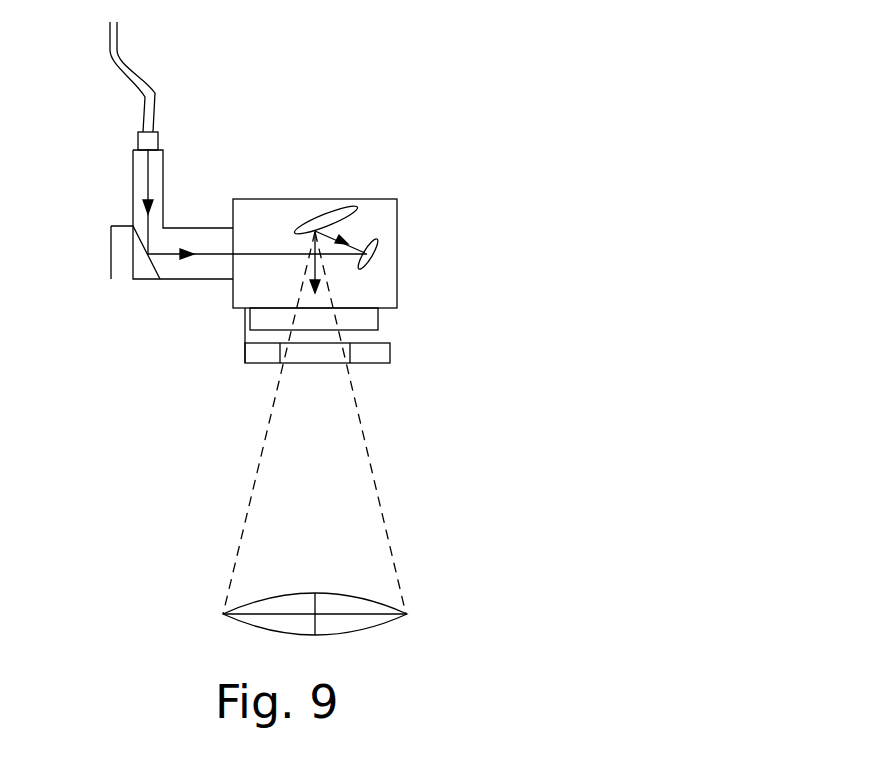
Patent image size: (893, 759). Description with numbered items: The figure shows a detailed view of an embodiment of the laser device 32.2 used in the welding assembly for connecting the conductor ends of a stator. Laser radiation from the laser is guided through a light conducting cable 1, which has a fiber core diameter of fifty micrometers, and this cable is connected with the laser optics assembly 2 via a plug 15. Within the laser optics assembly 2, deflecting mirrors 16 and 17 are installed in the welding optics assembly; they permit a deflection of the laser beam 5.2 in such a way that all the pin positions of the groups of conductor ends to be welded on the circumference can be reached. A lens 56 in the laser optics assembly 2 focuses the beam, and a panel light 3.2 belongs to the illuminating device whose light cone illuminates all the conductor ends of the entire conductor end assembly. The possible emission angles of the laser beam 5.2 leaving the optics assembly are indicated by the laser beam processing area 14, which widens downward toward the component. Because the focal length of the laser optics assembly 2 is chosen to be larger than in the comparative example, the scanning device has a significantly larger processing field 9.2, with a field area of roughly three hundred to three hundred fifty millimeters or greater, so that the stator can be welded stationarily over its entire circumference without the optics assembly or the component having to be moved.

The light conducting cable 1 is at (112, 45).
The plug 15 is at (153, 177).
The deflecting mirror 16 is at (318, 212).
The hairpin 17 is at (380, 259).
The laser optics assembly 2 is at (387, 215).
The laser device 32.2 is at (404, 198).
The lens 56 is at (298, 318).
The panel light 3.2 is at (377, 355).
The laser beam 5.2 is at (273, 462).
The laser beam processing area 14 is at (357, 496).
The processing field 9.2 is at (385, 627).